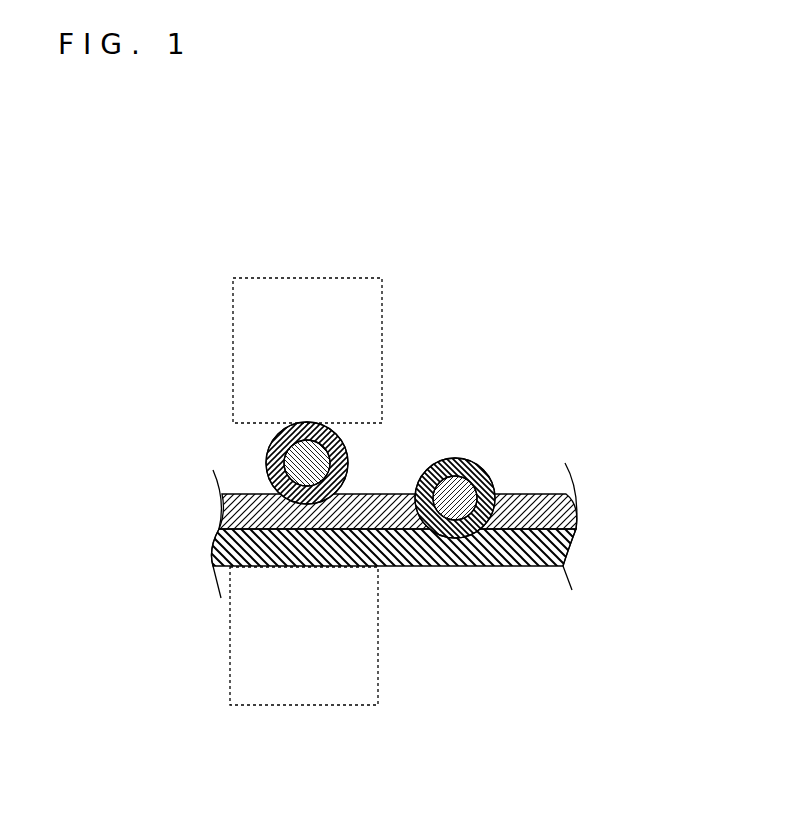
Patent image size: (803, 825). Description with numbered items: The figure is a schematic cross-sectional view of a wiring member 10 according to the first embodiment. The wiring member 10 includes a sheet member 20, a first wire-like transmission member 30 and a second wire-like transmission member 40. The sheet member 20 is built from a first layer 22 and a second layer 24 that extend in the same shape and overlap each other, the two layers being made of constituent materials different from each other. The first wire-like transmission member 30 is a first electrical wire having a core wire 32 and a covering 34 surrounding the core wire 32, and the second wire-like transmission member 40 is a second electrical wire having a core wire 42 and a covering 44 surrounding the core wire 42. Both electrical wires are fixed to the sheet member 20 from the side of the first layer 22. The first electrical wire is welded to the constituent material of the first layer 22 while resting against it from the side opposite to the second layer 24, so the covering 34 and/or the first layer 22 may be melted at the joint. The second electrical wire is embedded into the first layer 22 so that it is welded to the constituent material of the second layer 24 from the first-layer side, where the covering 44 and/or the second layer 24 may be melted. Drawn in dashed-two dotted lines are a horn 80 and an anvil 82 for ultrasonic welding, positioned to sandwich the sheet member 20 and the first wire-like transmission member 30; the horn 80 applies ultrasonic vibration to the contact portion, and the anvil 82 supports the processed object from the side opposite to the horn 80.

The wiring member 10 is at (508, 394).
The sheet member 20 is at (424, 511).
The first layer 22 is at (577, 512).
The second layer 24 is at (562, 550).
The first wire-like transmission member 30 is at (307, 463).
The core wire 32 is at (341, 440).
The covering 34 is at (326, 479).
The second wire-like transmission member 40 is at (465, 471).
The core wire 42 is at (458, 458).
The covering 44 is at (491, 478).
The horn 80 is at (308, 278).
The anvil 82 is at (306, 707).